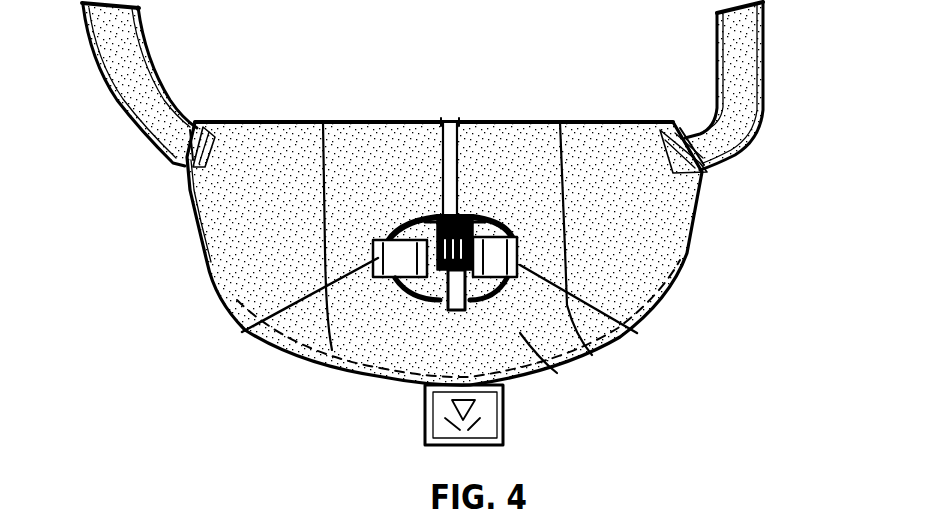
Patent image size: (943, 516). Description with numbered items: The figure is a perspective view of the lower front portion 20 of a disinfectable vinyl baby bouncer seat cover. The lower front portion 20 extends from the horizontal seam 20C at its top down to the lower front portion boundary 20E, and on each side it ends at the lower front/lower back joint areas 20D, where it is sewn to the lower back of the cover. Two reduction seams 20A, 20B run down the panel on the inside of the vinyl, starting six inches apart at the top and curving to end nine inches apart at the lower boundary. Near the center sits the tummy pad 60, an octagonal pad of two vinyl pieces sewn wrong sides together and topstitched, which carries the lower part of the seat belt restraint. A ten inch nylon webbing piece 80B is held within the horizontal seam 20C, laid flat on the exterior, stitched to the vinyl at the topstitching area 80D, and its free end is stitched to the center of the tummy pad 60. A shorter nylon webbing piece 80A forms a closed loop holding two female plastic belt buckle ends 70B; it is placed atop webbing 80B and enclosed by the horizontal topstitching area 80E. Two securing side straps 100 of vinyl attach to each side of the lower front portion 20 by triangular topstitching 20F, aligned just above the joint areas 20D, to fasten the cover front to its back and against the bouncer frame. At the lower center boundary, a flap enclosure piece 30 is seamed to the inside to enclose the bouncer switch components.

The lower front portion 20 is at (555, 373).
The reduction seam 20A is at (323, 243).
The reduction seam 20B is at (647, 283).
The horizontal seam 20C is at (447, 119).
The lower front/lower back joint area 20D is at (187, 156).
The lower front portion boundary 20E is at (430, 398).
The triangular topstitching 20F is at (217, 133).
The flap enclosure piece 30 is at (500, 425).
The tummy pad 60 is at (465, 217).
The female plastic belt buckle end 70B is at (242, 332).
The nylon webbing piece 80A is at (447, 213).
The nylon webbing piece 80B is at (457, 312).
The topstitching area 80D is at (443, 157).
The horizontal topstitching area 80E is at (385, 280).
The securing side strap 100 is at (102, 75).